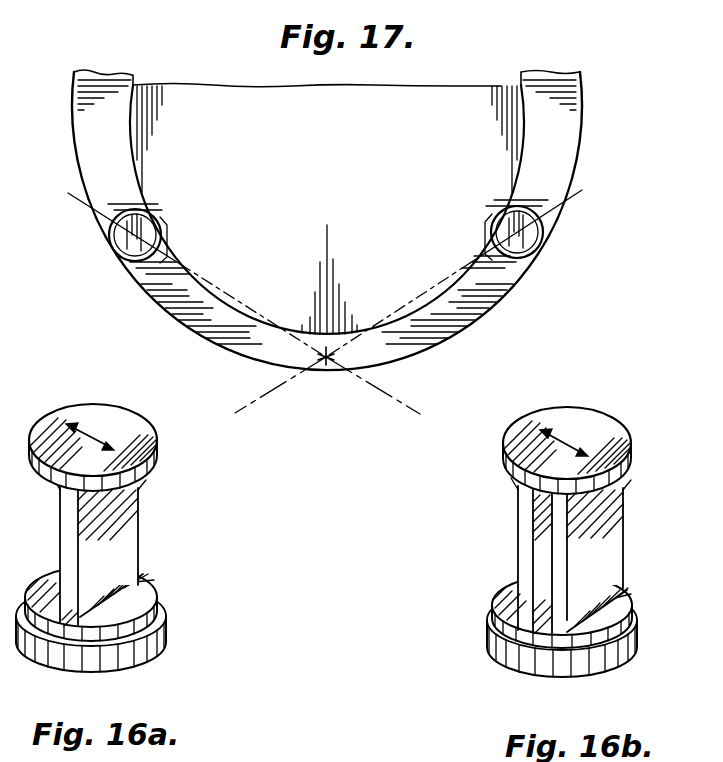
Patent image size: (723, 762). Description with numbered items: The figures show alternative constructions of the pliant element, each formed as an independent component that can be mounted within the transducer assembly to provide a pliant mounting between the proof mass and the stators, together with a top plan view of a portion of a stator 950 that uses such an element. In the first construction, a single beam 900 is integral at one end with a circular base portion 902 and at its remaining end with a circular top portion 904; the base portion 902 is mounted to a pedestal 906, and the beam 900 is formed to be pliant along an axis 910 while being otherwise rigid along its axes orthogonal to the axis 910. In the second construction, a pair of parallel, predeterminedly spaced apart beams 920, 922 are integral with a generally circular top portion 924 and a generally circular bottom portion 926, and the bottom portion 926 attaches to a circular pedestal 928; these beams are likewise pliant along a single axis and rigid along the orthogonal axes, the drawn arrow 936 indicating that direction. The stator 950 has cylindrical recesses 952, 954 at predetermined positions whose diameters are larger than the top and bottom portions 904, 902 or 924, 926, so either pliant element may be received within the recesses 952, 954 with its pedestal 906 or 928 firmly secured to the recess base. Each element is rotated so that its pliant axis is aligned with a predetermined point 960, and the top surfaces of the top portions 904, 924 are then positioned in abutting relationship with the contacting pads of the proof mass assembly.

In FIG. 17, the stator 950 is at (587, 128).
In FIG. 17, the cylindrical recess 952 is at (114, 251).
In FIG. 17, the cylindrical recess 954 is at (548, 242).
In FIG. 17, the predetermined point 960 is at (327, 362).
In FIG. 16A, the beam 900 is at (133, 518).
In FIG. 16A, the circular base portion 902 is at (160, 598).
In FIG. 16A, the circular top portion 904 is at (152, 447).
In FIG. 16A, the pedestal 906 is at (165, 637).
In FIG. 16A, the pliant axis 910 is at (98, 434).
In FIG. 16B, the beam 920 is at (520, 526).
In FIG. 16B, the beam 922 is at (555, 562).
In FIG. 16B, the top portion 924 is at (628, 463).
In FIG. 16B, the bottom portion 926 is at (630, 610).
In FIG. 16B, the circular pedestal 928 is at (625, 658).
In FIG. 16B, the rotation direction arrow 936 is at (573, 433).